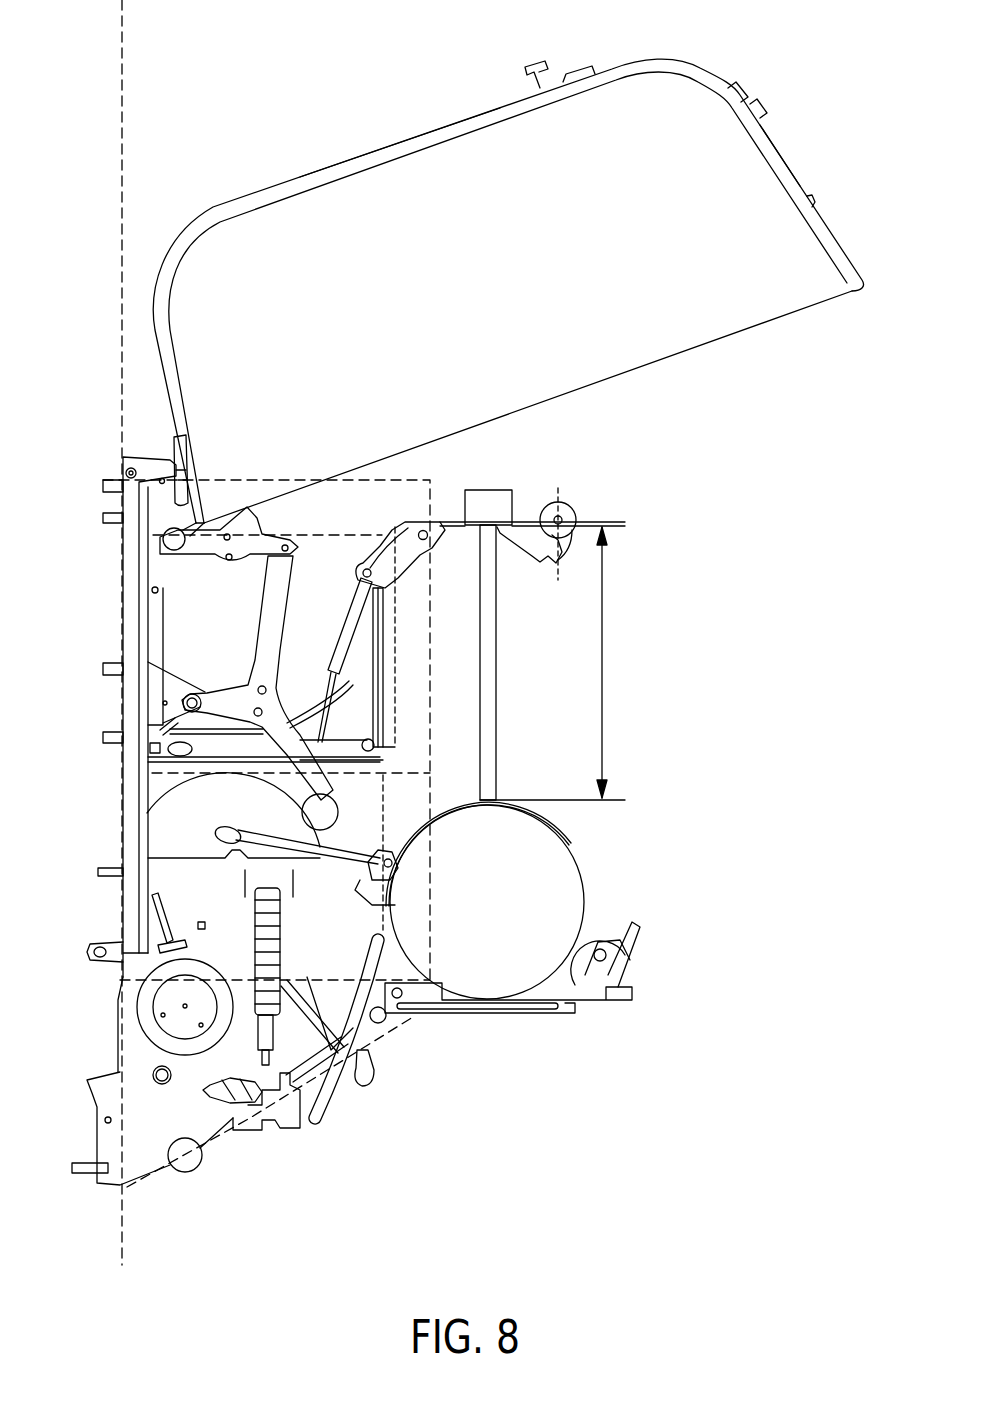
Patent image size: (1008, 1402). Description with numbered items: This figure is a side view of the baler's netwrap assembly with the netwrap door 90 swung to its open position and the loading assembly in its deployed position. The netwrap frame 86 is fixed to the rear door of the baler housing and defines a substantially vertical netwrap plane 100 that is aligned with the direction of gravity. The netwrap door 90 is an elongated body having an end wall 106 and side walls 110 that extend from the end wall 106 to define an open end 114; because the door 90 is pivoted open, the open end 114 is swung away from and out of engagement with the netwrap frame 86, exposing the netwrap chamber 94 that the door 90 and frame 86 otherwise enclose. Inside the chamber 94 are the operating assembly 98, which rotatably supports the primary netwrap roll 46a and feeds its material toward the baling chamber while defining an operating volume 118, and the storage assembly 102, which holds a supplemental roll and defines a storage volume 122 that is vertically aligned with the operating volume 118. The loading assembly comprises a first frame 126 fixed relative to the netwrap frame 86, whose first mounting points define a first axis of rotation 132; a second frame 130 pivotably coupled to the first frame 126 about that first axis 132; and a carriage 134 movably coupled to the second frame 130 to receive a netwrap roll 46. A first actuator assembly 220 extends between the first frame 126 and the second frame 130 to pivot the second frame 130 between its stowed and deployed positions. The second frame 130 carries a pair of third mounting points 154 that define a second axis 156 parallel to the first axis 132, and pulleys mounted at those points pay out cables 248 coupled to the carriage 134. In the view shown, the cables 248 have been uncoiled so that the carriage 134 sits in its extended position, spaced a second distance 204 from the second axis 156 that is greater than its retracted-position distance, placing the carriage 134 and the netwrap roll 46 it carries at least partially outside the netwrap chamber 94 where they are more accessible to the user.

The netwrap plane 100 is at (128, 88).
The netwrap door 90 is at (673, 92).
The end wall 106 is at (400, 140).
The side walls 110 is at (793, 160).
The open end 114 is at (720, 358).
The netwrap frame 86 is at (137, 617).
The storage volume 122 is at (315, 530).
The storage assembly 102 is at (263, 630).
The netwrap chamber 94 is at (390, 488).
The second frame 130 is at (400, 513).
The first actuator assembly 220 is at (350, 635).
The first axis of rotation 132 is at (366, 742).
The cables 248 is at (490, 672).
The second distance 204 is at (605, 672).
The third mounting points 154 is at (570, 510).
The second axis 156 is at (543, 527).
The first frame 126 is at (222, 752).
The primary netwrap roll 46a is at (160, 848).
The carriage 134 is at (470, 805).
The netwrap roll 46 is at (560, 888).
The operating volume 118 is at (190, 983).
The operating assembly 98 is at (317, 940).